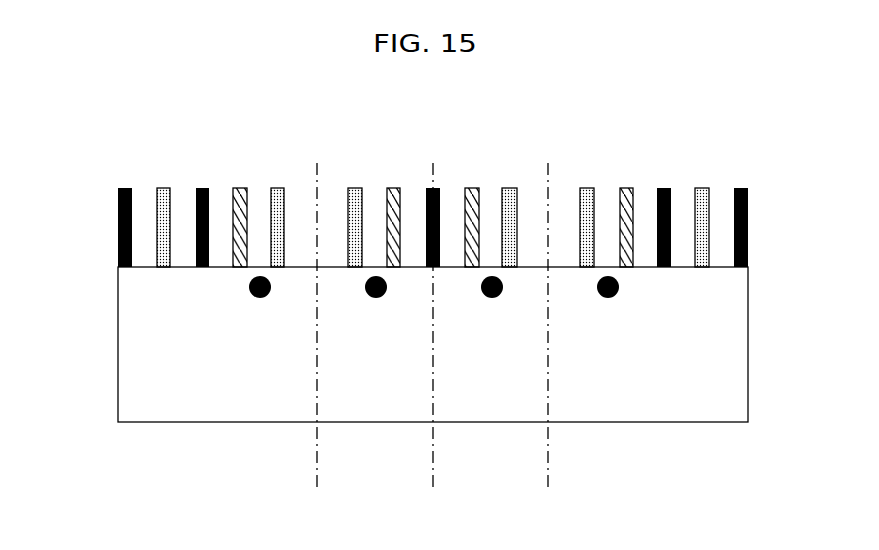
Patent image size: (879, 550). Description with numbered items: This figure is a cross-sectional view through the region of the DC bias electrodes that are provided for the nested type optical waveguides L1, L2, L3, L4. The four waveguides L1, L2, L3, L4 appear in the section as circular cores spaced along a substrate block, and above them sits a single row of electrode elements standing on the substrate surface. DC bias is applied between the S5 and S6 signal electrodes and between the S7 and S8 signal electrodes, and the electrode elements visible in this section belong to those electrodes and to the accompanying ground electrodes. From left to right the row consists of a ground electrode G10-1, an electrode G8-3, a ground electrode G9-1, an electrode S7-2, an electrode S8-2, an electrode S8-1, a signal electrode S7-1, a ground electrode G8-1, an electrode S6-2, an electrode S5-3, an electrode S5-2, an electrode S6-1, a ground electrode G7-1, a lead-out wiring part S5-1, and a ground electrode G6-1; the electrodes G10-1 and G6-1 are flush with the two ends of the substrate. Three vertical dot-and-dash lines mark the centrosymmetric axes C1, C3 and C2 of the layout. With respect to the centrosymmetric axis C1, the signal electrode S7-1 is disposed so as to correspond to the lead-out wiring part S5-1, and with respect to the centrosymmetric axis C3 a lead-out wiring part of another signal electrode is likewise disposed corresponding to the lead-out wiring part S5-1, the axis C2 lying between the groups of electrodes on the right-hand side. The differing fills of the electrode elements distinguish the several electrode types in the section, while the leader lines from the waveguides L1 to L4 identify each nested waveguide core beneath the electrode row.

The gate electrode G10-1 is at (118, 233).
The gate electrode G8-3 is at (158, 188).
The gate electrode G9-1 is at (198, 188).
The source electrode S7-2 is at (238, 188).
The source electrode S8-2 is at (275, 188).
The source electrode S8-1 is at (352, 188).
The signal electrode S7-1 is at (395, 188).
The gate electrode G8-1 is at (432, 188).
The source electrode S6-2 is at (470, 188).
The source electrode S5-3 is at (510, 188).
The source electrode S5-2 is at (583, 188).
The source electrode S6-1 is at (624, 188).
The gate electrode G7-1 is at (662, 188).
The lead-out wiring part S5-1 is at (702, 188).
The gate electrode G6-1 is at (740, 188).
The nested type optical waveguide L4 is at (262, 298).
The nested type optical waveguide L3 is at (378, 298).
The nested type optical waveguide L2 is at (495, 298).
The nested type optical waveguide L1 is at (612, 298).
The centrosymmetric axis C1 is at (317, 343).
The centrosymmetric axis C3 is at (432, 343).
The cutting line C2 is at (548, 343).